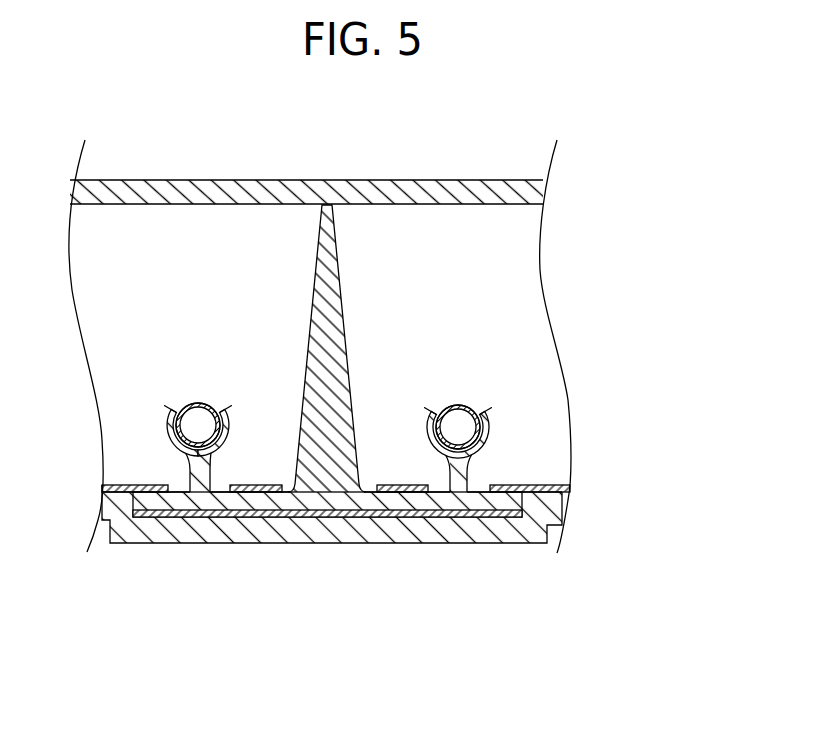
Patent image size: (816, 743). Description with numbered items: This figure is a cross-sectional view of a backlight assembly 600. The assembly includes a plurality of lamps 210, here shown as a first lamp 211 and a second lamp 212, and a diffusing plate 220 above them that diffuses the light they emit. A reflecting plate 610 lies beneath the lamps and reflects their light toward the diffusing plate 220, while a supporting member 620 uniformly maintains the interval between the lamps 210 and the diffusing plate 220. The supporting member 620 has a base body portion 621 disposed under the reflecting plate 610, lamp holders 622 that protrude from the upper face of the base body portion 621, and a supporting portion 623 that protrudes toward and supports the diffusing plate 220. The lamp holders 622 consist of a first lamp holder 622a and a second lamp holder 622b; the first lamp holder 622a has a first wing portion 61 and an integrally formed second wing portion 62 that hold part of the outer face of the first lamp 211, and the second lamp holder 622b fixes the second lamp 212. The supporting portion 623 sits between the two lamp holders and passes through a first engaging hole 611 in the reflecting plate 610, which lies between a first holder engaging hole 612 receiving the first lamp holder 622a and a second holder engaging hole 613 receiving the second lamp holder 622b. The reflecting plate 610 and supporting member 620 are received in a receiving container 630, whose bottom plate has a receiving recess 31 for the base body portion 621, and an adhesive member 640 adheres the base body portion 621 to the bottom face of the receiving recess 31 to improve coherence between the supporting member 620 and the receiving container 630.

The backlight assembly 600 is at (338, 123).
The diffusing plate 220 is at (541, 196).
The supporting portion 623 is at (335, 272).
The lamps 210 is at (299, 386).
The first lamp 211 is at (197, 406).
The second lamp 212 is at (431, 394).
The first wing portion 61 is at (166, 407).
The second wing portion 62 is at (232, 407).
The reflecting plate 610 is at (380, 532).
The first engaging hole 611 is at (368, 487).
The first holder engaging hole 612 is at (184, 496).
The second holder engaging hole 613 is at (478, 514).
The supporting member 620 is at (509, 527).
The base body portion 621 is at (140, 502).
The lamp holders 622 is at (327, 566).
The first lamp holder 622a is at (204, 496).
The second lamp holder 622b is at (441, 546).
The receiving container 630 is at (563, 513).
The adhesive member 640 is at (176, 508).
The receiving recess 31 is at (456, 514).